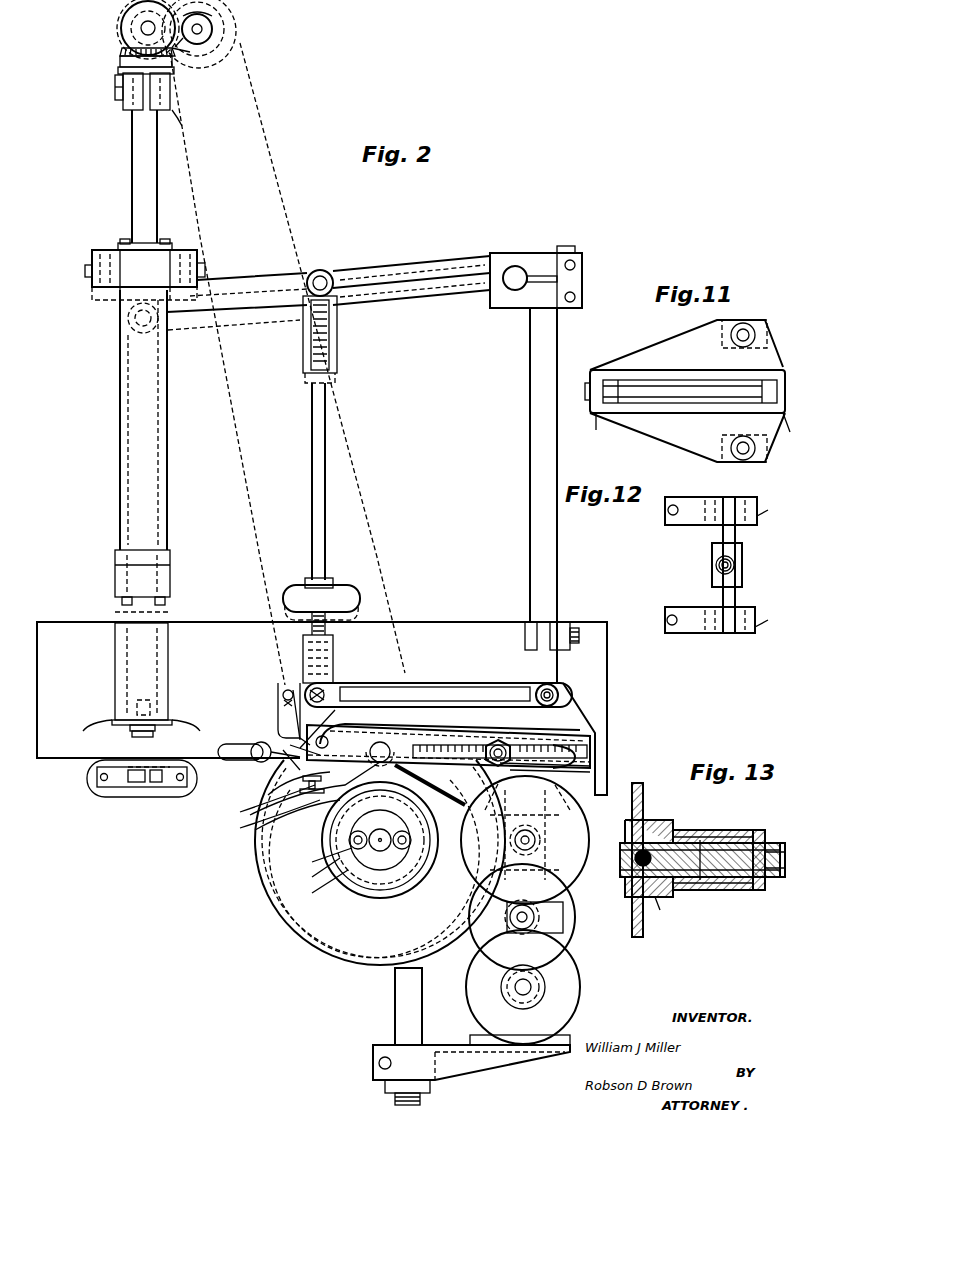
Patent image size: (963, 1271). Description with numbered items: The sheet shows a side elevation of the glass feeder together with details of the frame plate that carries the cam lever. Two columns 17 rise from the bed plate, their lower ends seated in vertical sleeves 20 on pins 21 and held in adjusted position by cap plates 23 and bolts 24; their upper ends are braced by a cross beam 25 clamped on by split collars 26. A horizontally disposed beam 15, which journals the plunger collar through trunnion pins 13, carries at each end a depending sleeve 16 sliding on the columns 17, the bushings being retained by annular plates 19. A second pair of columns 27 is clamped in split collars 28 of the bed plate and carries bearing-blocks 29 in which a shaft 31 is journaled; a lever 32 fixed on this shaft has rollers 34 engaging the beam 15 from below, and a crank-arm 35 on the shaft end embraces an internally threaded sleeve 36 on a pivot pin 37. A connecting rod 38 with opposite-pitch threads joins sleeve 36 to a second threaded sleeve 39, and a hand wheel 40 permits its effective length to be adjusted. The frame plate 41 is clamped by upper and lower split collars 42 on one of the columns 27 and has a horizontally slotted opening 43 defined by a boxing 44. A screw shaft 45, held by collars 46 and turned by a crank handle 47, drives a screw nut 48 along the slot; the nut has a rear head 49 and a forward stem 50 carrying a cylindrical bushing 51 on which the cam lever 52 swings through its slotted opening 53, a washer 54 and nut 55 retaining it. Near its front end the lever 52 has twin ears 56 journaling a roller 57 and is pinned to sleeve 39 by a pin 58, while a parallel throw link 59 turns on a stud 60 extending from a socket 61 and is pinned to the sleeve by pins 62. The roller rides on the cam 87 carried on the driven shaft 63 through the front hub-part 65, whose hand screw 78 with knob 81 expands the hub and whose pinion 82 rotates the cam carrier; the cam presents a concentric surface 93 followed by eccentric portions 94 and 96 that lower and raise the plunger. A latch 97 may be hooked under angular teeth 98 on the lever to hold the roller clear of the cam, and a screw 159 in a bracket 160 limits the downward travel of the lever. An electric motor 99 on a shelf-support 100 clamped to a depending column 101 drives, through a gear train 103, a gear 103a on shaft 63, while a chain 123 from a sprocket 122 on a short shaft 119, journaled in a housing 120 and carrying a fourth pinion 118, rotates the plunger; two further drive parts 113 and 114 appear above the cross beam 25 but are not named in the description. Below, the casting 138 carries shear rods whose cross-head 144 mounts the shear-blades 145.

In FIG. 2, the pulley 114 is at (122, 36).
In FIG. 2, the brush 113 is at (122, 51).
In FIG. 2, the short shaft 119 is at (213, 29).
In FIG. 2, the housing 120 is at (212, 16).
In FIG. 2, the sprocket 122 is at (224, 42).
In FIG. 2, the fourth pinion 118 is at (233, 58).
In FIG. 2, the cross beam 25 is at (137, 95).
In FIG. 2, the split collars 26 is at (177, 104).
In FIG. 2, the columns 17 is at (132, 205).
In FIG. 2, the annular plates 19 is at (120, 246).
In FIG. 2, the beam 15 is at (144, 275).
In FIG. 2, the trunnion pins 13 is at (85, 283).
In FIG. 2, the rollers 34 is at (128, 318).
In FIG. 2, the depending sleeves 16 is at (120, 366).
In FIG. 2, the pins 21 is at (115, 612).
In FIG. 2, the vertical sleeves 20 is at (168, 667).
In FIG. 2, the cap plates 23 is at (132, 728).
In FIG. 2, the bolts 24 is at (133, 736).
In FIG. 2, the plate or casting 138 is at (100, 800).
In FIG. 2, the cross-head 144 is at (135, 790).
In FIG. 2, the shear-blades 145 is at (166, 788).
In FIG. 2, the lever 32 is at (272, 280).
In FIG. 2, the crank-arm 35 is at (360, 308).
In FIG. 2, the pivot pin 37 is at (320, 272).
In FIG. 2, the internally threaded sleeve 36 is at (337, 340).
In FIG. 2, the connecting rod 38 is at (326, 395).
In FIG. 2, the bearing-blocks 29 is at (506, 308).
In FIG. 2, the shaft 31 is at (515, 266).
In FIG. 2, the columns 27 is at (530, 405).
In FIG. 2, the split collars 28 is at (565, 622).
In FIG. 2, the chain 123 is at (358, 488).
In FIG. 2, the hand wheel 40 is at (340, 590).
In FIG. 2, the second threaded sleeve 39 is at (333, 648).
In FIG. 2, the parallel throw link 59 is at (422, 683).
In FIG. 2, the pins 62 is at (324, 692).
In FIG. 2, the stud 60 is at (558, 692).
In FIG. 2, the split collars 42 is at (556, 688).
In FIG. 12, the split collars 42 is at (686, 525).
In FIG. 2, the collars 46 is at (415, 740).
In FIG. 2, the frame plate 41 is at (490, 745).
In FIG. 11, the frame plate 41 is at (685, 391).
In FIG. 12, the frame plate 41 is at (735, 537).
In FIG. 13, the frame plate 41 is at (643, 800).
In FIG. 2, the screw shaft 45 is at (466, 745).
In FIG. 13, the screw shaft 45 is at (635, 858).
In FIG. 2, the screw nut 48 is at (508, 745).
In FIG. 13, the screw nut 48 is at (628, 872).
In FIG. 2, the twin ears 56 is at (328, 742).
In FIG. 2, the roller 57 is at (360, 768).
In FIG. 2, the stem 50 is at (490, 765).
In FIG. 13, the stem 50 is at (735, 835).
In FIG. 2, the eccentric portion 96 is at (420, 778).
In FIG. 2, the cam lever 52 is at (580, 744).
In FIG. 13, the cam lever 52 is at (710, 890).
In FIG. 2, the slotted opening 53 is at (590, 760).
In FIG. 2, the boxing 44 is at (590, 772).
In FIG. 11, the boxing 44 is at (693, 430).
In FIG. 12, the boxing 44 is at (742, 555).
In FIG. 13, the boxing 44 is at (660, 820).
In FIG. 2, the crank handle 47 is at (259, 743).
In FIG. 2, the latch 97 is at (278, 698).
In FIG. 2, the angular teeth 98 is at (280, 762).
In FIG. 2, the pin 58 is at (301, 746).
In FIG. 2, the eccentric portion 94 is at (305, 795).
In FIG. 2, the bracket 160 is at (263, 802).
In FIG. 2, the screw 159 is at (266, 817).
In FIG. 2, the gear 103a is at (380, 873).
In FIG. 2, the front hub-part 65 is at (372, 866).
In FIG. 2, the driven shaft 63 is at (380, 839).
In FIG. 2, the concentric perimetral surface 93 is at (349, 840).
In FIG. 2, the hand screw 78 is at (321, 858).
In FIG. 2, the knob 81 is at (315, 870).
In FIG. 2, the cam 87 is at (319, 884).
In FIG. 2, the pinion 82 is at (410, 848).
In FIG. 2, the washer 54 is at (488, 798).
In FIG. 13, the washer 54 is at (760, 890).
In FIG. 2, the gear train 103 is at (570, 928).
In FIG. 2, the electric motor 99 is at (578, 990).
In FIG. 2, the depending column 101 is at (395, 1012).
In FIG. 2, the shelf-support 100 is at (475, 1068).
In FIG. 11, the slotted opening 43 is at (690, 391).
In FIG. 13, the slotted opening 43 is at (667, 914).
In FIG. 11, the socket 61 is at (744, 391).
In FIG. 12, the socket 61 is at (772, 563).
In FIG. 13, the head 49 is at (625, 845).
In FIG. 13, the bushing 51 is at (728, 890).
In FIG. 13, the nut 55 is at (775, 843).